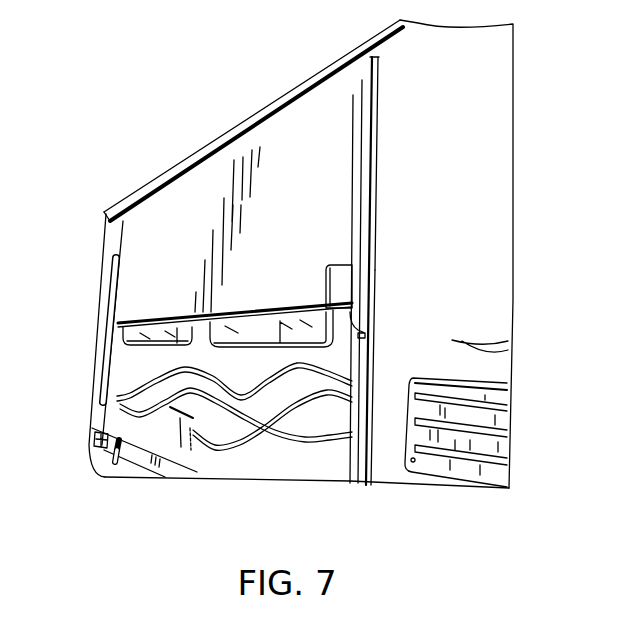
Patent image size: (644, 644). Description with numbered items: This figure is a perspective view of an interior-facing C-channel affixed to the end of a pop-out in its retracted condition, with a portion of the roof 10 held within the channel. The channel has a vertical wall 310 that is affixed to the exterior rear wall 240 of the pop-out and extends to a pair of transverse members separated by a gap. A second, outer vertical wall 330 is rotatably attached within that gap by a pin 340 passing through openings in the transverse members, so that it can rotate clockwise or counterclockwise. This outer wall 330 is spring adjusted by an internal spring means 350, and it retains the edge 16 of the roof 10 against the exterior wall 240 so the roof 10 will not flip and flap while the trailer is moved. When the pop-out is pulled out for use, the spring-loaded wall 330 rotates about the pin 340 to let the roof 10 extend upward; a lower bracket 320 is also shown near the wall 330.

The roof 10 is at (270, 198).
The edge of the roof 16 is at (125, 338).
The exterior wall 240 is at (263, 470).
The vertical wall 310 is at (370, 275).
The lower bracket 320 is at (365, 329).
The vertical wall 330 is at (327, 282).
The pin 340 is at (360, 304).
The internal spring means 350 is at (352, 268).